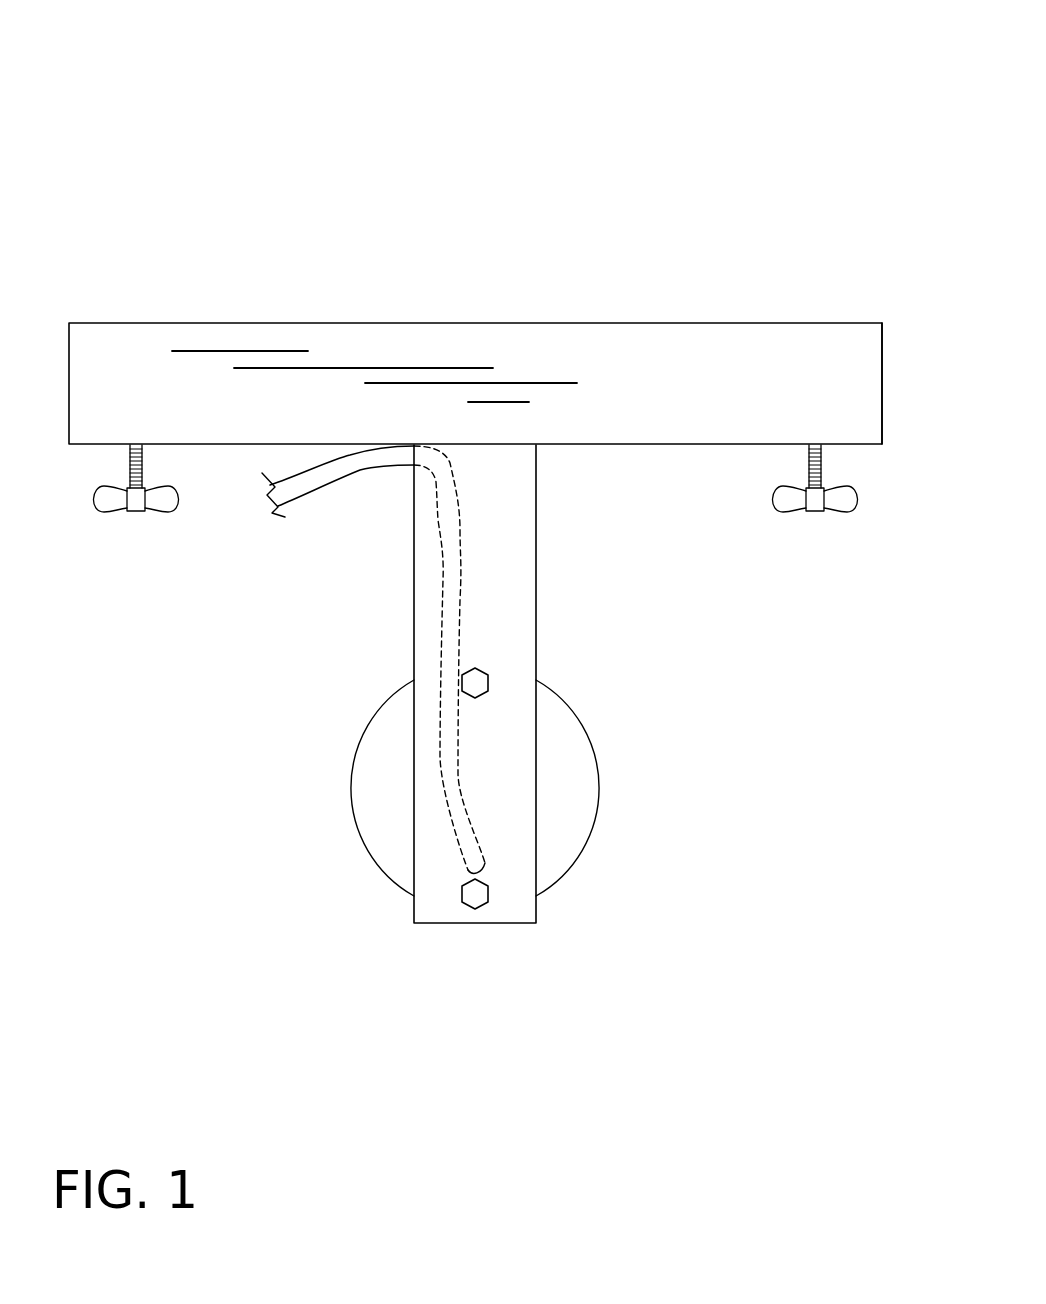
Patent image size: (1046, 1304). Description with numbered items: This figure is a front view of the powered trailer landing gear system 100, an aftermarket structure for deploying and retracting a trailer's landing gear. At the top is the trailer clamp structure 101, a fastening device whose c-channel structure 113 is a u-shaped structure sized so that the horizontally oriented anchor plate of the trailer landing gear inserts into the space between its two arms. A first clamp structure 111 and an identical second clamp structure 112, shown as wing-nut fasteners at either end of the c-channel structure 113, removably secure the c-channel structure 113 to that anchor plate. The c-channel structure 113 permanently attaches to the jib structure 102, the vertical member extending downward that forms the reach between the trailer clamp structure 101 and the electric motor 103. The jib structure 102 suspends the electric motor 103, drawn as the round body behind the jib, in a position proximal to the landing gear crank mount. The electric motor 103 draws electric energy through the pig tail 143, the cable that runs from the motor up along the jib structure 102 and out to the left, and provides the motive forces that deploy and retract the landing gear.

The powered trailer landing gear system 100 is at (98, 124).
The trailer clamp structure 101 is at (393, 353).
The jib structure 102 is at (508, 902).
The electric motor 103 is at (583, 772).
The first clamp structure 111 is at (135, 513).
The second clamp structure 112 is at (825, 515).
The c-channel structure 113 is at (870, 382).
The pig tail 143 is at (322, 485).